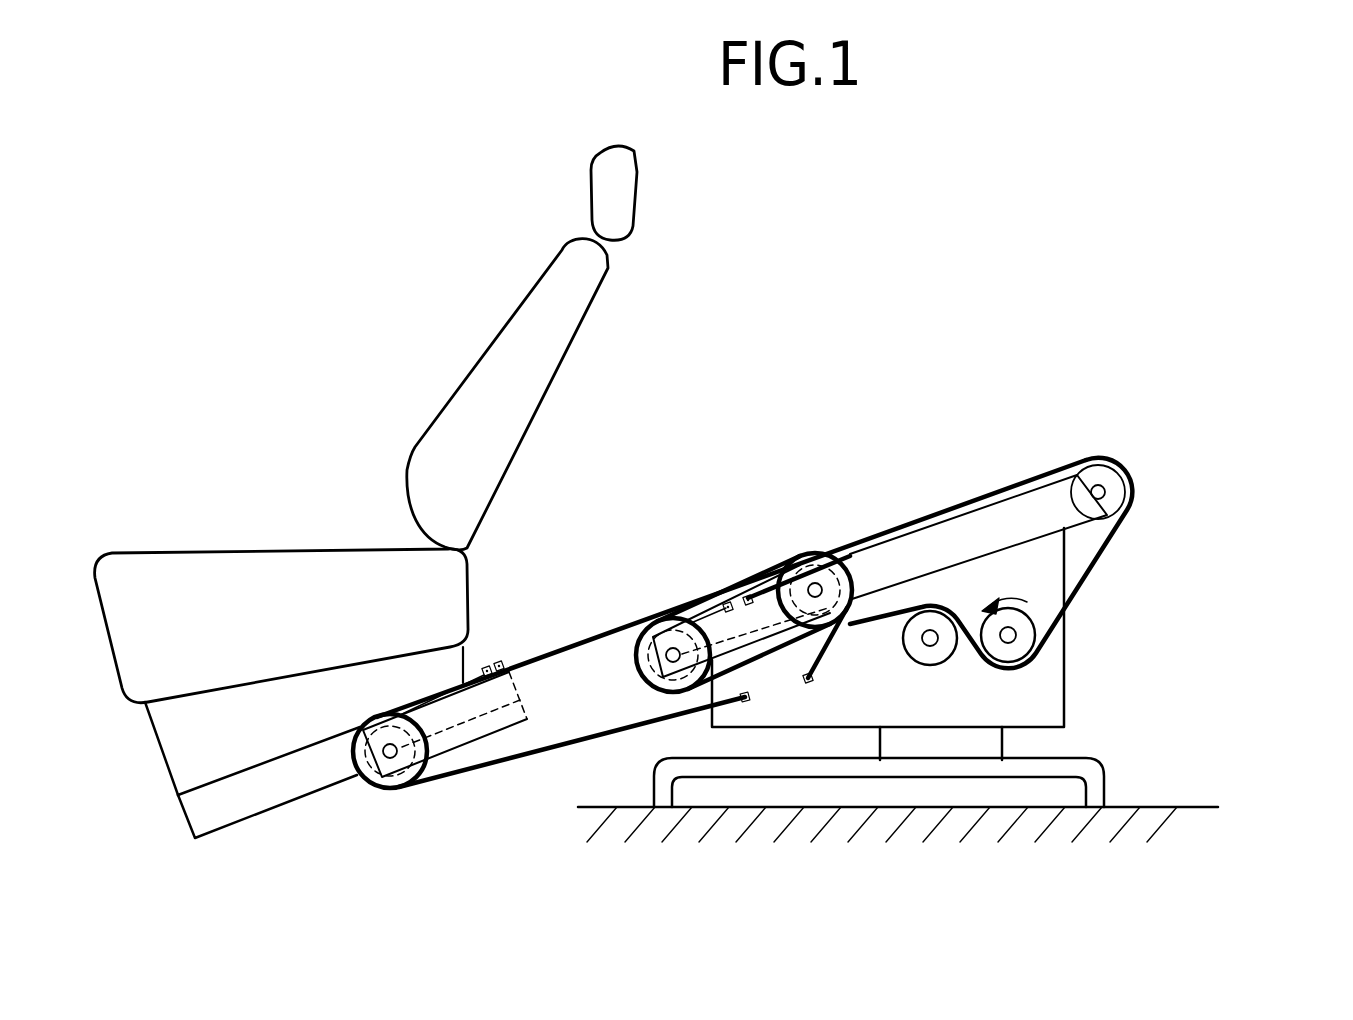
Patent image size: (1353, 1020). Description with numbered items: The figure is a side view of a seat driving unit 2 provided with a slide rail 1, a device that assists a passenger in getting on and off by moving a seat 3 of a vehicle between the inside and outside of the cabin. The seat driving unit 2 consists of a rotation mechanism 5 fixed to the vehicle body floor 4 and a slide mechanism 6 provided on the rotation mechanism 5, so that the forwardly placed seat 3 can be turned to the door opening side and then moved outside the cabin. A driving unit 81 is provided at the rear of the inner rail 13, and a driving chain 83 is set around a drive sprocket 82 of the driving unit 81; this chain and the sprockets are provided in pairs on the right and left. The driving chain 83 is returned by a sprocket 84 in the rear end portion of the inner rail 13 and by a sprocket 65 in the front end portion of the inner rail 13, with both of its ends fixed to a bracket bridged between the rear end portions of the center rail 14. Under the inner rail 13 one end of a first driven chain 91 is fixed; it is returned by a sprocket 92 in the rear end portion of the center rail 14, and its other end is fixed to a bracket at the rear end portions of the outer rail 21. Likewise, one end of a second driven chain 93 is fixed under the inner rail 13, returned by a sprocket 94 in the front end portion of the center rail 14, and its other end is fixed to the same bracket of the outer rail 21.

The slide rail 1 is at (878, 428).
The seat driving unit 2 is at (956, 644).
The seat 3 is at (644, 172).
The vehicle body floor 4 is at (1160, 815).
The rotation mechanism 5 is at (990, 743).
The slide mechanism 6 is at (1045, 686).
The inner rail 13 is at (878, 583).
The center rail 14 is at (541, 703).
The outer rail 21 is at (255, 792).
The sprocket 65 is at (640, 680).
The driving unit 81 is at (1073, 528).
The drive sprocket 82 is at (1025, 625).
The driving chain 83 is at (1005, 487).
The sprocket 84 is at (1133, 478).
The first driven chain 91 is at (623, 620).
The sprocket 92 is at (818, 552).
The second driven chain 93 is at (450, 776).
The sprocket 94 is at (372, 787).